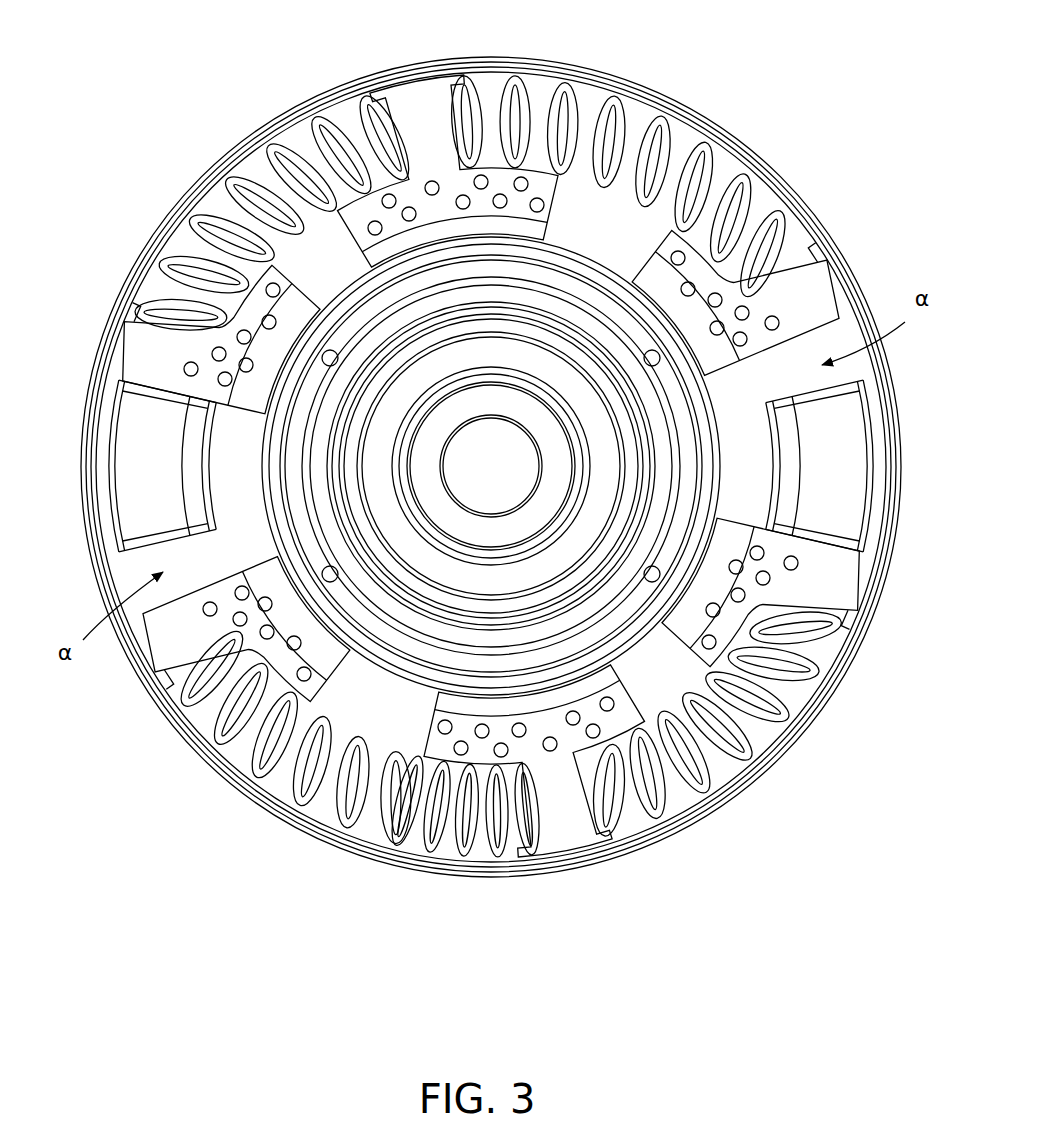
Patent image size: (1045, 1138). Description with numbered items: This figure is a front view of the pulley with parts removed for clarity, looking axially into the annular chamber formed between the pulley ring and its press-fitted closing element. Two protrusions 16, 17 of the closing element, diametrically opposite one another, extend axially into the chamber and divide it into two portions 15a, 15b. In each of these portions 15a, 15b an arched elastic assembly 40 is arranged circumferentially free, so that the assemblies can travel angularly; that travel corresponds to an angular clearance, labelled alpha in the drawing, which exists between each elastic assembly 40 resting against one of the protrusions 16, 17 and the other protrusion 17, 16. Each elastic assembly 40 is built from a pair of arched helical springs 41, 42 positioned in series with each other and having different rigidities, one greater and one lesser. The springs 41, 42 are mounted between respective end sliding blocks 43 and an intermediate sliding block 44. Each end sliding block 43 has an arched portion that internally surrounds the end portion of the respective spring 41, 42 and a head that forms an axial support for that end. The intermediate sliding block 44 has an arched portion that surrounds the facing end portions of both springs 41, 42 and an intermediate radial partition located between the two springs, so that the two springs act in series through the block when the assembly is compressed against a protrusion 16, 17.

The portion of the chamber 15a is at (460, 825).
The portion of the chamber 15b is at (603, 243).
The protrusion 16 is at (858, 500).
The protrusion 17 is at (130, 455).
The arched elastic assembly 40 is at (262, 112).
The arched helical spring 41 is at (727, 150).
The arched helical spring 42 is at (265, 200).
The end sliding block 43 is at (770, 305).
The intermediate sliding block 44 is at (430, 160).